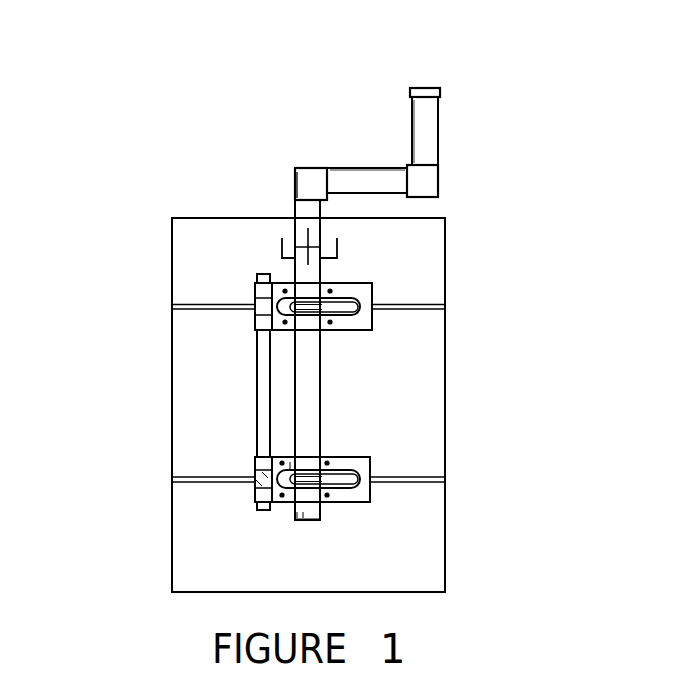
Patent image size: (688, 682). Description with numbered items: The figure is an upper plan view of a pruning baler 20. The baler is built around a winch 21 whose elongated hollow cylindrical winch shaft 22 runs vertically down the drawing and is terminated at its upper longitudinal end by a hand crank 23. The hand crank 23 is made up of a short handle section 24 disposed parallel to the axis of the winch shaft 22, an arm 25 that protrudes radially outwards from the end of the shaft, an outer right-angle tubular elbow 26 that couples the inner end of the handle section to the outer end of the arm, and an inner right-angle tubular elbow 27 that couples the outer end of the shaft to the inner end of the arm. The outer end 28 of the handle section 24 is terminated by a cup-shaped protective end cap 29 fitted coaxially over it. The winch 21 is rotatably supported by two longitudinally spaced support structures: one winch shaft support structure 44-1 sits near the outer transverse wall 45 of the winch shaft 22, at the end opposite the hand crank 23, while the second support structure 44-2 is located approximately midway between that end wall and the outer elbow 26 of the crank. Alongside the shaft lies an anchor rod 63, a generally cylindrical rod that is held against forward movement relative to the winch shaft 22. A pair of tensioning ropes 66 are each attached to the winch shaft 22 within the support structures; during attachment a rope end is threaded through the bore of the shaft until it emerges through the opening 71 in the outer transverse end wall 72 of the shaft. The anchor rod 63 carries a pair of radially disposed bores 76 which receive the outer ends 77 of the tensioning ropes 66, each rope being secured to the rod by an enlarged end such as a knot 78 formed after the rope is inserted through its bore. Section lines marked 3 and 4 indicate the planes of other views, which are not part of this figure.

The section line 3- 3 is at (310, 153).
The section line 4- 4 is at (313, 237).
The pruning baler 20 is at (493, 309).
The winch 21 is at (445, 165).
The winch shaft 22 is at (320, 388).
The hand crank 23 is at (295, 168).
The handle section 24 is at (412, 128).
The arm 25 is at (372, 195).
The outer right-angle tubular elbow 26 is at (438, 177).
The inner right-angle tubular elbow 27 is at (295, 182).
The outer end of crank handle section 28 is at (438, 110).
The protective end cap 29 is at (422, 88).
The winch shaft support structure 44-1 is at (372, 457).
The second support structure 44-2 is at (375, 328).
The outer transverse wall 45 is at (313, 520).
The anchor rod 63 is at (257, 412).
The tensioning ropes 66 is at (167, 307).
The opening 71 is at (300, 520).
The outer transverse end wall 72 is at (276, 551).
The radially disposed bores 76 is at (255, 483).
The outer ends of tensioning ropes 77 is at (293, 460).
The knot 78 is at (267, 475).